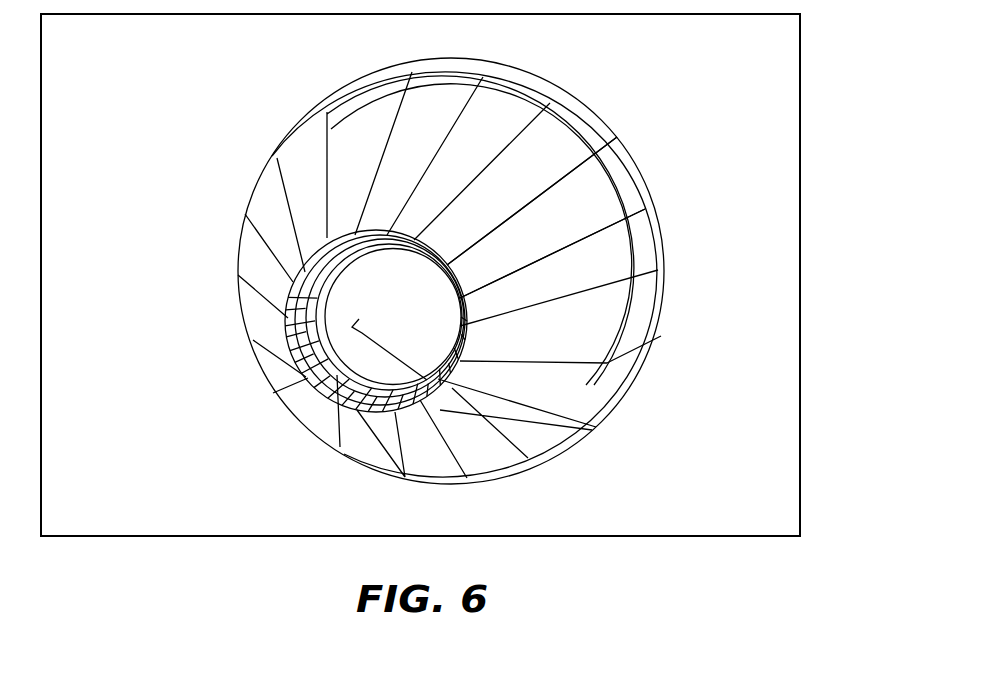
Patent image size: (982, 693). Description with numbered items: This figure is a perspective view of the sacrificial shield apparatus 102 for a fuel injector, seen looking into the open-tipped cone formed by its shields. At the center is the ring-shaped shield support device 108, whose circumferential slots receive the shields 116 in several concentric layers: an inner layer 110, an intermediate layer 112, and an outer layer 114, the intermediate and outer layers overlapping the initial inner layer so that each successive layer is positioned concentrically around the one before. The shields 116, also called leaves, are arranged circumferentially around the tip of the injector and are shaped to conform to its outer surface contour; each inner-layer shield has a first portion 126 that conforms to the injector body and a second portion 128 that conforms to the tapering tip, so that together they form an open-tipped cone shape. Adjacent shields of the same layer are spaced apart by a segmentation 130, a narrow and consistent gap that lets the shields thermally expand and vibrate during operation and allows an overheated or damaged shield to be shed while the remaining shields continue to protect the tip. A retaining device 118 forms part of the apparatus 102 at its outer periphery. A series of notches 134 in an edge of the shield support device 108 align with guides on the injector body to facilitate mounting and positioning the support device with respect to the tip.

The apparatus 102 is at (680, 244).
The shield support device 108 is at (383, 306).
The inner layer 110 is at (308, 306).
The intermediate layer 112 is at (302, 347).
The outer layer 114 is at (287, 380).
The shields 116 is at (612, 206).
The retaining device 118 is at (658, 272).
The first portion 126 is at (632, 253).
The second portion 128 is at (570, 280).
The segmentation 130 is at (550, 313).
The notches 134 is at (360, 333).